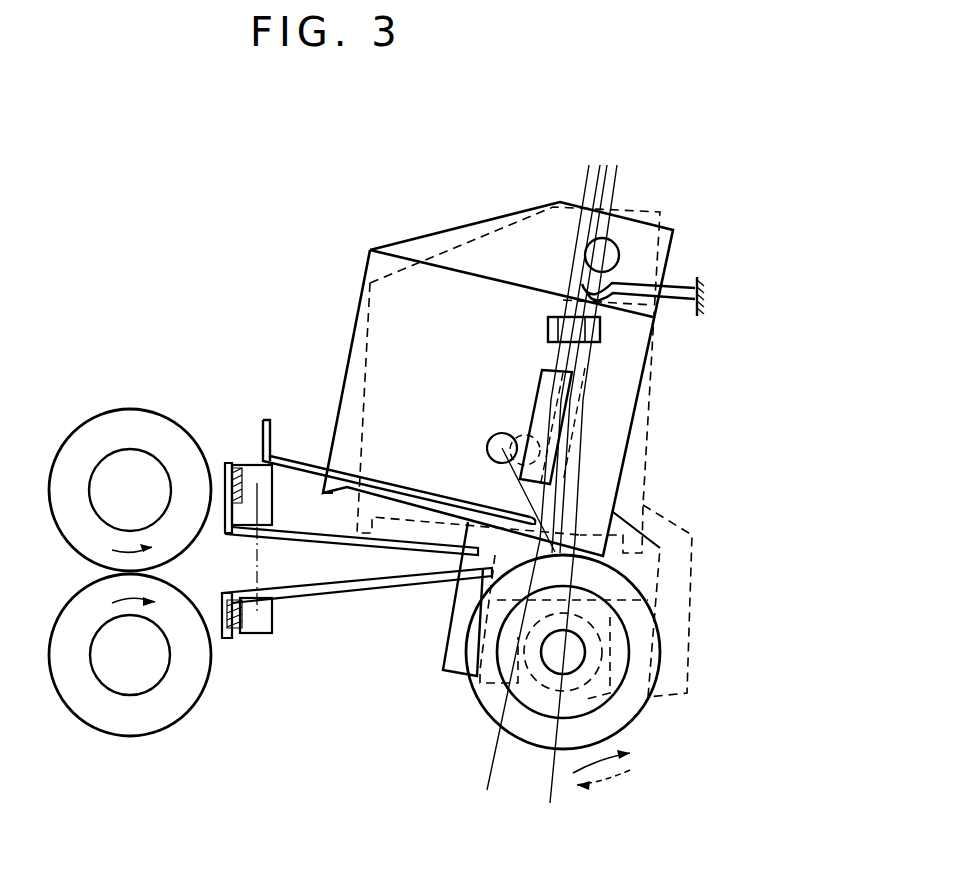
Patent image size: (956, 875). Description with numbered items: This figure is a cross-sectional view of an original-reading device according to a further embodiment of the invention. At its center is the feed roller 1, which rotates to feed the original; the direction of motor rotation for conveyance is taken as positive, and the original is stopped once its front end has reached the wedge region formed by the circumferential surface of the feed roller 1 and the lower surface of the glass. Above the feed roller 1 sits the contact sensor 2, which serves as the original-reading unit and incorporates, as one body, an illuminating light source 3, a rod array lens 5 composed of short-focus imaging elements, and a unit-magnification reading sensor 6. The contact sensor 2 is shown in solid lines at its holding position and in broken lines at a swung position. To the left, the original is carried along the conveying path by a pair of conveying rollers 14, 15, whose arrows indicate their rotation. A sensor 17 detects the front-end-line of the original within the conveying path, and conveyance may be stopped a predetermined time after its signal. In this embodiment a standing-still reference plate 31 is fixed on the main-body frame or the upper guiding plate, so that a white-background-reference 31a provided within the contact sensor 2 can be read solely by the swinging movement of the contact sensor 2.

The feed roller 1 is at (585, 707).
The contact sensor 2 is at (386, 314).
The illuminating light source 3 is at (500, 435).
The rod array lens 5 is at (542, 385).
The unit-magnification reading sensor 6 is at (548, 330).
The conveying roller 14 is at (167, 717).
The conveying roller 15 is at (155, 420).
The sensor 17 is at (247, 470).
The standing-still reference plate 31 is at (304, 460).
The white-background-reference 31a is at (526, 517).